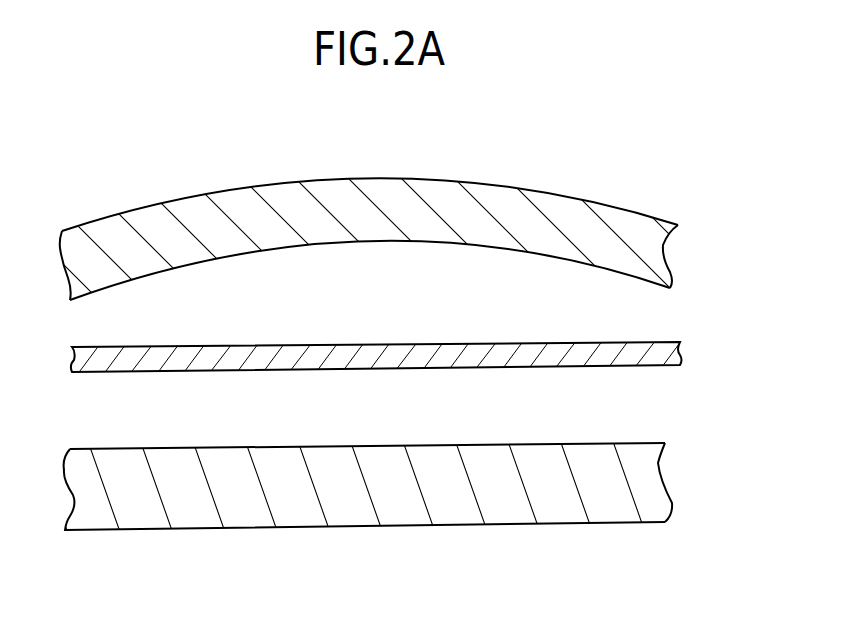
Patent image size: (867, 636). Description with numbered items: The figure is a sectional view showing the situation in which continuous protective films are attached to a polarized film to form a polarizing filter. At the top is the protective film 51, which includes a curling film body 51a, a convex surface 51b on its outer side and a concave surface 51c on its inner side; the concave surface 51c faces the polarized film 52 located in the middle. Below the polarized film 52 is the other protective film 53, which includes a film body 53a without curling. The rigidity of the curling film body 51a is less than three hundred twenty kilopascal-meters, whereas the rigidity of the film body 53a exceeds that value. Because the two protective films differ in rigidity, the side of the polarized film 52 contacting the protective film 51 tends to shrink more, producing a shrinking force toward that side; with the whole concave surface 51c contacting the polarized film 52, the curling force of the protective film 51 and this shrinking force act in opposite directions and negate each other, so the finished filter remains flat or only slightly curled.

The protective film 51 is at (385, 198).
The curling film body 51a is at (658, 252).
The convex surface 51b is at (543, 193).
The concave surface 51c is at (370, 280).
The polarized film 52 is at (680, 344).
The protective film 53 is at (400, 528).
The film body 53a is at (657, 462).